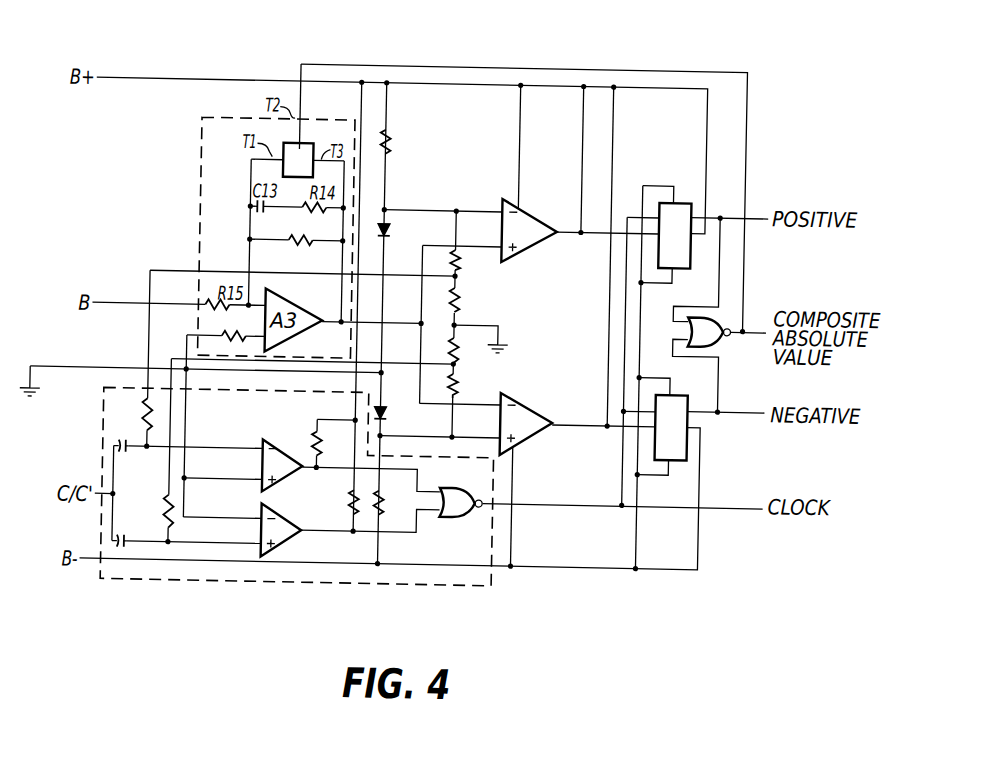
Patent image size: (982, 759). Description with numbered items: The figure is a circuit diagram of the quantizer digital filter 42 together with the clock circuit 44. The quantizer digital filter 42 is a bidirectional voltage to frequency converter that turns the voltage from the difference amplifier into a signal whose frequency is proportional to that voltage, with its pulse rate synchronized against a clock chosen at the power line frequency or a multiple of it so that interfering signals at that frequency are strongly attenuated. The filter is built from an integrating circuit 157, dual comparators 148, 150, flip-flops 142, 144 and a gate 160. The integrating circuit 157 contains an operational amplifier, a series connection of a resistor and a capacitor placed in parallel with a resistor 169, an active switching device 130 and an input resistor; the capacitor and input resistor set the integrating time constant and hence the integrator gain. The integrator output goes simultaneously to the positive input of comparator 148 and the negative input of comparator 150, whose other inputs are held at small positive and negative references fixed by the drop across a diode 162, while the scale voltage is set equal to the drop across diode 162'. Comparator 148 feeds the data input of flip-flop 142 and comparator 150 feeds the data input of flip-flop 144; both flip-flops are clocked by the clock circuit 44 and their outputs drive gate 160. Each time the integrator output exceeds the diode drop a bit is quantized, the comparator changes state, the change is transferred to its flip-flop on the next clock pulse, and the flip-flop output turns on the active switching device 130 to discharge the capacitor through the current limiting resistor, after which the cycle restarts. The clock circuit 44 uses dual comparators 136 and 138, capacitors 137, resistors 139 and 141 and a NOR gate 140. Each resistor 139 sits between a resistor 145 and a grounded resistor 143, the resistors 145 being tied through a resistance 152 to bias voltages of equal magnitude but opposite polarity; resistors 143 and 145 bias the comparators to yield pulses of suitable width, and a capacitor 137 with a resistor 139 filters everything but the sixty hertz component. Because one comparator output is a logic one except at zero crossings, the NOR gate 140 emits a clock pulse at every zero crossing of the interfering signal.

The quantizer digital filter 42 is at (465, 114).
The clock circuit 44 is at (448, 588).
The active switching device 130 is at (300, 122).
The comparator 136 is at (270, 443).
The capacitor 137 is at (131, 456).
The comparator 138 is at (273, 513).
The resistor 139 is at (157, 419).
The NOR gate 140 is at (473, 512).
The resistor 141 is at (332, 411).
The flip-flop 142 is at (680, 199).
The resistor 143 is at (462, 339).
The flip-flop 144 is at (674, 389).
The resistor 145 is at (461, 265).
The comparator 148 is at (517, 206).
The comparator 150 is at (531, 398).
The resistance 152 is at (387, 151).
The integrating circuit 157 is at (197, 157).
The NOR gate 160 is at (718, 315).
The diode 162 is at (404, 233).
The diode 162' is at (405, 421).
The resistor 169 is at (296, 250).